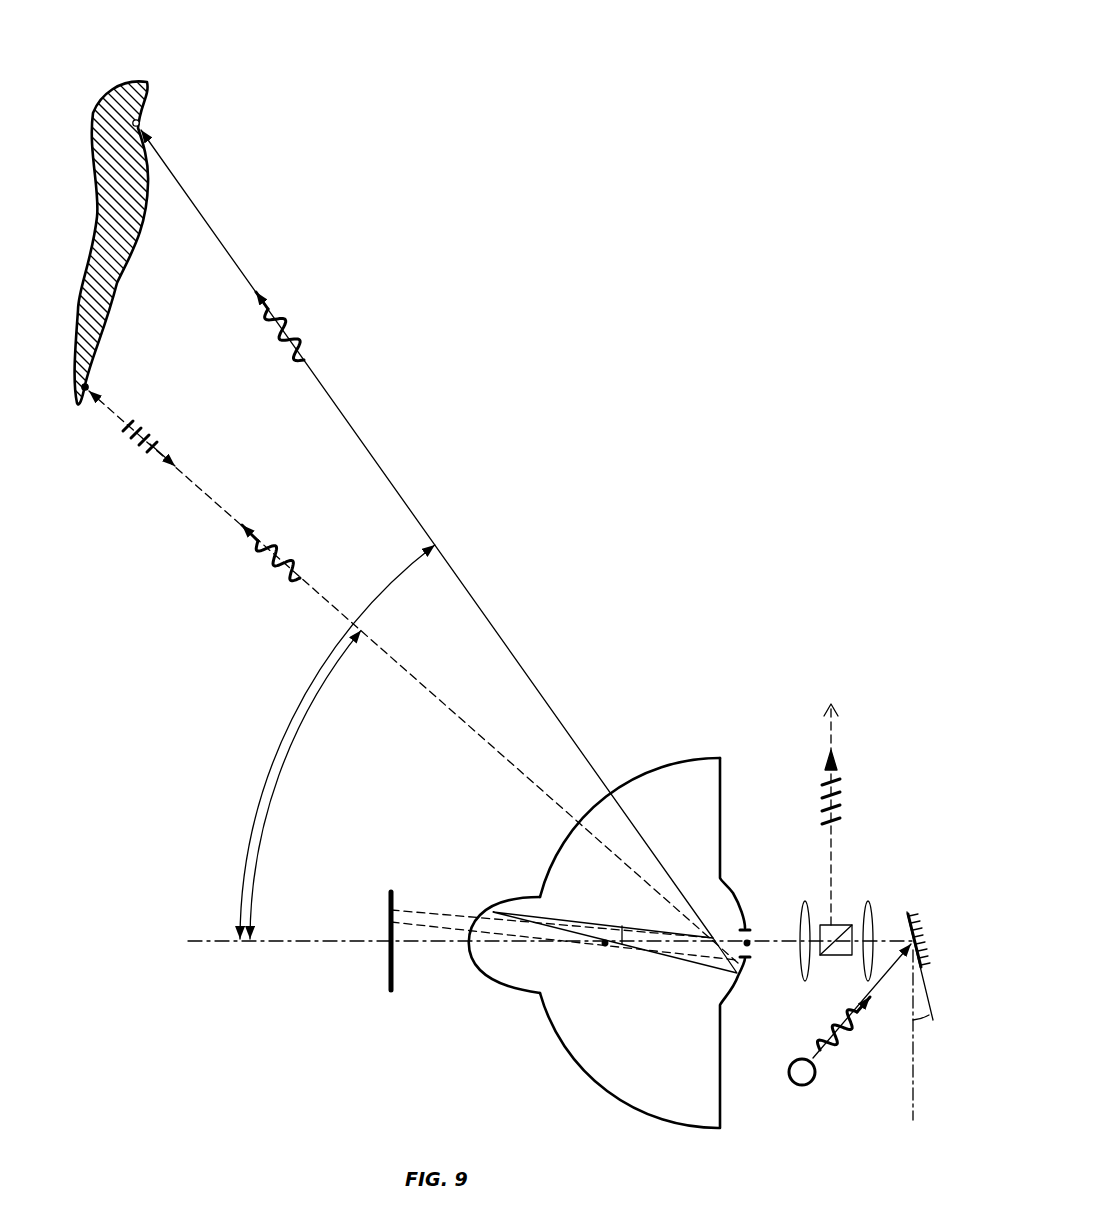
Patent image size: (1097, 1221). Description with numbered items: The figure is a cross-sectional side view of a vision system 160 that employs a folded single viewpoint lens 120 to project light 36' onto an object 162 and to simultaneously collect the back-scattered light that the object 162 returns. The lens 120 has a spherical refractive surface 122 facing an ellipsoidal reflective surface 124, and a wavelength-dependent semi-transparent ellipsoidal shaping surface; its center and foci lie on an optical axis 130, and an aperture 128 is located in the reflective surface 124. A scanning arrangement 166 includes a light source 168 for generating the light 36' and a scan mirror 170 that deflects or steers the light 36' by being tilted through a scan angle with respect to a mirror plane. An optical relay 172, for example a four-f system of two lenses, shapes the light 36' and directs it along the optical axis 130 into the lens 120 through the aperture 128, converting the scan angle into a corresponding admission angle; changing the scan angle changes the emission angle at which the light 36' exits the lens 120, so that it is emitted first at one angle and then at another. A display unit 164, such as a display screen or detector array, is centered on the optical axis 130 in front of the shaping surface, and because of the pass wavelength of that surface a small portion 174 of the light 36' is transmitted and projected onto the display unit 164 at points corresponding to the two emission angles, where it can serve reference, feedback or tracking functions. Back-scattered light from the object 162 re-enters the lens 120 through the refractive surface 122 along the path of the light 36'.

The folded single viewpoint lens 120 is at (590, 920).
The spherical refractive surface 122 is at (650, 769).
The ellipsoidal reflective surface 124 is at (741, 927).
The aperture 128 is at (738, 987).
The optical axis 130 is at (285, 945).
The vision system 160 is at (772, 575).
The object 162 is at (150, 83).
The display unit 164 is at (391, 992).
The scanning arrangement 166 is at (835, 947).
The light source 168 is at (800, 1087).
The scan mirror 170 is at (906, 912).
The optical relay 172 is at (808, 866).
The portion of light 174 is at (434, 884).
The light 36' is at (544, 689).